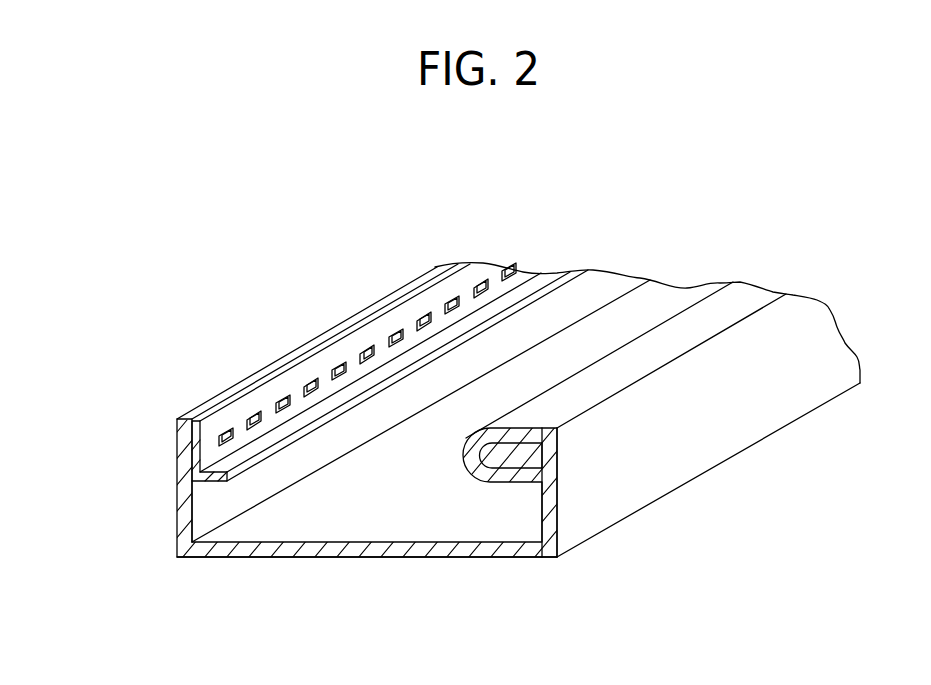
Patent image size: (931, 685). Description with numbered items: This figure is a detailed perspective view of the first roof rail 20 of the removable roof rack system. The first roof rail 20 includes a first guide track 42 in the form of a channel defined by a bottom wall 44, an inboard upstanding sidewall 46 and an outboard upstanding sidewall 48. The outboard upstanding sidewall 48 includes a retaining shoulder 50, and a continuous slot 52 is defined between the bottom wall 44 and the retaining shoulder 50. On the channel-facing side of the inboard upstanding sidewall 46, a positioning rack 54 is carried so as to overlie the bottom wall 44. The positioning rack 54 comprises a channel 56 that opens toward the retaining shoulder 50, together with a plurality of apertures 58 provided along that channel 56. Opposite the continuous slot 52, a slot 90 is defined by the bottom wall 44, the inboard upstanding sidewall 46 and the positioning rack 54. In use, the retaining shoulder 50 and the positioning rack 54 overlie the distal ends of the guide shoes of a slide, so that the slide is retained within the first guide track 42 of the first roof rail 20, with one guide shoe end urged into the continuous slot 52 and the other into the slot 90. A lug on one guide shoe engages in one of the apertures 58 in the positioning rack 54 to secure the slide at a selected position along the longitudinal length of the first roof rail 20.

The first roof rail 20 is at (343, 288).
The first guide track 42 is at (200, 570).
The bottom wall 44 is at (303, 558).
The inboard upstanding sidewall 46 is at (177, 500).
The outboard upstanding sidewall 48 is at (657, 463).
The retaining shoulder 50 is at (557, 415).
The continuous slot 52 is at (528, 508).
The positioning rack 54 is at (317, 332).
The channel 56 is at (468, 302).
The apertures 58 is at (285, 413).
The slot 90 is at (215, 502).